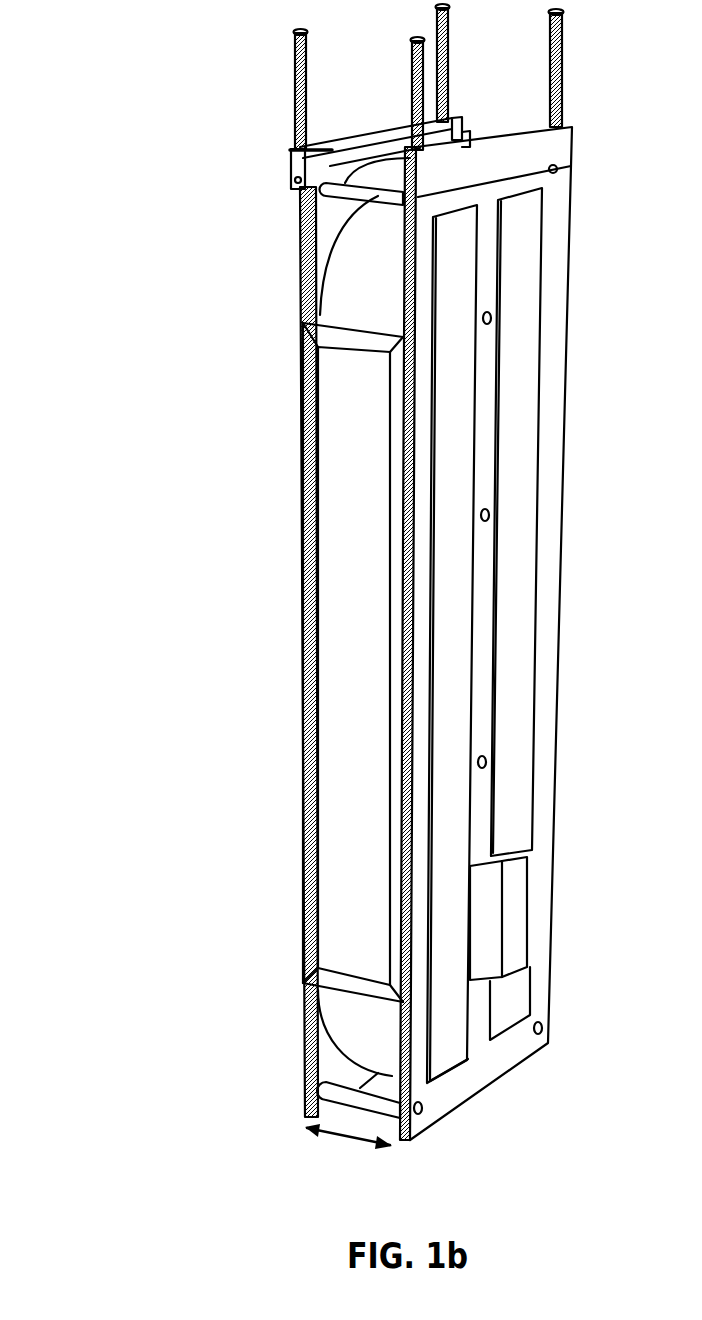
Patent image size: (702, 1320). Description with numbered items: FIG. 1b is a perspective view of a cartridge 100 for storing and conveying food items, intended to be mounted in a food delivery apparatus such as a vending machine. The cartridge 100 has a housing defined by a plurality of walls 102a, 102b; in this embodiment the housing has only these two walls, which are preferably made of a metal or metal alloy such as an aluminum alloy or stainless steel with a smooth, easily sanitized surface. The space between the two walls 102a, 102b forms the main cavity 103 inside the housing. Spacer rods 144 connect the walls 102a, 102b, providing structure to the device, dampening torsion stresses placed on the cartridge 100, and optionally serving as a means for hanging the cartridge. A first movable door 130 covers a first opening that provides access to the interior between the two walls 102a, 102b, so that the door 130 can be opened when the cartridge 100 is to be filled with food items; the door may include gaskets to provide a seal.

The cartridge 100 is at (203, 114).
The wall 102a is at (410, 1137).
The wall 102b is at (307, 1105).
The main cavity 103 is at (348, 1157).
The first movable door 130 is at (302, 647).
The spacer rods 144 is at (365, 195).